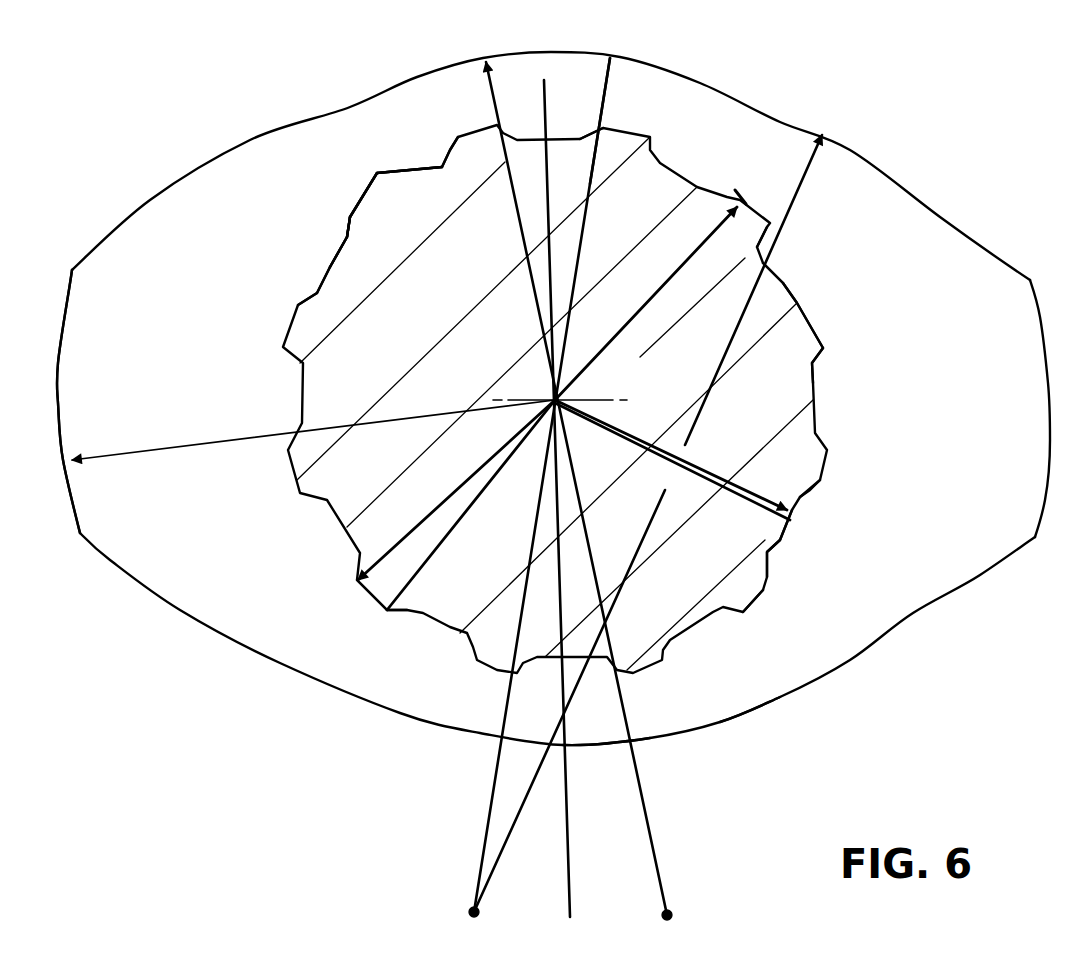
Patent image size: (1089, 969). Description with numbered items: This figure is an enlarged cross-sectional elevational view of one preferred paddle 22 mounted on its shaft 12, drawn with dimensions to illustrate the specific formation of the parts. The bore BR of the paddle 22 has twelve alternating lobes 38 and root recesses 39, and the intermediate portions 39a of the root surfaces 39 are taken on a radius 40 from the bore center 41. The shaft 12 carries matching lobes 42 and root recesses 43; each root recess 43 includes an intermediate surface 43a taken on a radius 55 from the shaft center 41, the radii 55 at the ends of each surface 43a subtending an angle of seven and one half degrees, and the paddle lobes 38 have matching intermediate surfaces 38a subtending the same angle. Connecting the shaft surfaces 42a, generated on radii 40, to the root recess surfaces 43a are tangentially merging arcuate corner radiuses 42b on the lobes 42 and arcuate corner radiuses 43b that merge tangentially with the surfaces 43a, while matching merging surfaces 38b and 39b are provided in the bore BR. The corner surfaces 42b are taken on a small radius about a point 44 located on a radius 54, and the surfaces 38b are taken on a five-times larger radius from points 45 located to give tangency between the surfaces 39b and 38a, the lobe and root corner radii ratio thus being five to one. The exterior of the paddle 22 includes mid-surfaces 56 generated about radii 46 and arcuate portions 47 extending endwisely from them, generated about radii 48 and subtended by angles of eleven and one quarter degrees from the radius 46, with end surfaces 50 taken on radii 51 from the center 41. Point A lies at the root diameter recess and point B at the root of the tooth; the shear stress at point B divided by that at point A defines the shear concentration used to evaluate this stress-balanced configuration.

The shaft 12 is at (797, 360).
The paddle 22 is at (1003, 283).
The lobe 38 is at (423, 172).
The intermediate surface 38a is at (776, 545).
The merging surface 38b is at (341, 241).
The root recess 39 is at (366, 172).
The intermediate portion 39a is at (375, 178).
The merging surface 39b is at (352, 214).
The radius 40 is at (470, 505).
The bore center 41 is at (558, 398).
The lobe 42 is at (369, 204).
The shaft surface 42a is at (377, 178).
The corner radius 42b is at (372, 210).
The root recess 43 is at (349, 265).
The intermediate surface 43a is at (333, 287).
The corner radius 43b is at (336, 262).
The point 44 is at (753, 197).
The point 45 is at (582, 138).
The radius 46 is at (545, 112).
The arcuate portion 47 is at (747, 710).
The radius 48 is at (802, 183).
The end surface 50 is at (60, 403).
The radius 51 is at (253, 440).
The radius 54 is at (658, 290).
The radius 55 is at (652, 450).
The mid-surface 56 is at (580, 753).
The point A is at (447, 168).
The point B is at (462, 155).
The bore BR is at (803, 303).